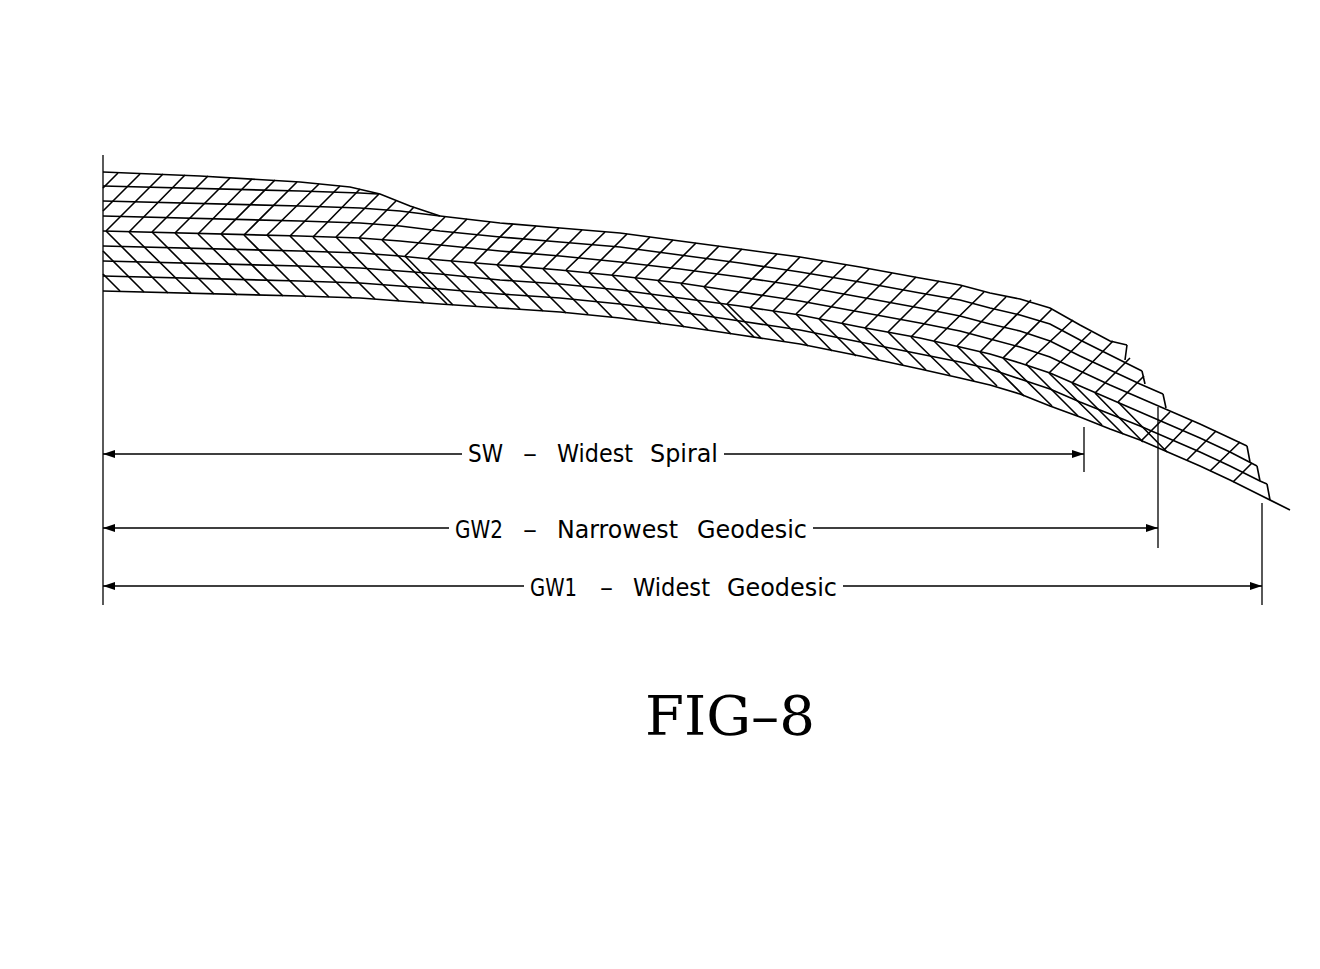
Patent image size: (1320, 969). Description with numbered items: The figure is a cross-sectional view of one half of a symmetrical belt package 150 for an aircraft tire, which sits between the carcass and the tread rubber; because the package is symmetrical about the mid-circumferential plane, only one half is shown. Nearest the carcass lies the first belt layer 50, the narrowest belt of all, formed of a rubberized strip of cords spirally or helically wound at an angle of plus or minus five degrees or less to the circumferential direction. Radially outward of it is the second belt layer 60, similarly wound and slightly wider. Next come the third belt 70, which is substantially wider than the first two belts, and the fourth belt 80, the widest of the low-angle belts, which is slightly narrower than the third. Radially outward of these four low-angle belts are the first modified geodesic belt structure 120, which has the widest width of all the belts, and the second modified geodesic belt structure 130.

The belt package 150 is at (497, 160).
The second modified geodesic belt structure 130 is at (688, 238).
The first modified geodesic belt structure 120 is at (829, 318).
The first belt layer 50 is at (198, 283).
The second belt layer 60 is at (330, 280).
The third belt 70 is at (797, 337).
The fourth belt 80 is at (907, 343).